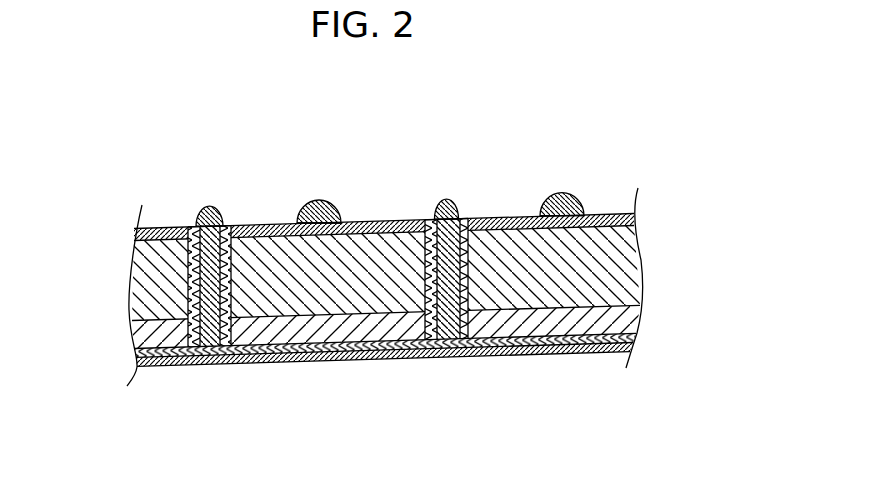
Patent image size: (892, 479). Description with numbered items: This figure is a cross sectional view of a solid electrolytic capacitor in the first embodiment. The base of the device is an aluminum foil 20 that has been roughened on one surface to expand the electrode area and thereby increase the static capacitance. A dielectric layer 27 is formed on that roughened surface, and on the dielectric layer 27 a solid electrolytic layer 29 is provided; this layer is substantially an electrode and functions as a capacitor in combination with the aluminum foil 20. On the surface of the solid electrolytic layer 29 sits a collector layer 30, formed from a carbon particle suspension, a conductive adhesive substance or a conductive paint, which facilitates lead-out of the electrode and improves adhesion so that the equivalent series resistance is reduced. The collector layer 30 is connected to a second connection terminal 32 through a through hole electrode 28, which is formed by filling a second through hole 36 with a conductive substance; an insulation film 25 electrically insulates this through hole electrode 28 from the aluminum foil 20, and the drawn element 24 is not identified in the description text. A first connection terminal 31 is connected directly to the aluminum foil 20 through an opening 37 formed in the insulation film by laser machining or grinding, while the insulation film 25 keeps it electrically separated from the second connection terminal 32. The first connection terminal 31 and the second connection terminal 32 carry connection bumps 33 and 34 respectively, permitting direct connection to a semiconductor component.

The aluminum foil 20 is at (617, 248).
The via conductor 24 is at (235, 337).
The insulation film 25 is at (423, 220).
The dielectric layer 27 is at (640, 307).
The through hole electrode 28 is at (212, 340).
The solid electrolytic layer 29 is at (633, 338).
The collector layer 30 is at (367, 360).
The first connection terminal 31 is at (298, 222).
The second connection terminal 32 is at (197, 225).
The connection bump 33 is at (313, 205).
The connection bump 34 is at (206, 212).
The second through hole 36 is at (220, 325).
The opening 37 is at (343, 227).